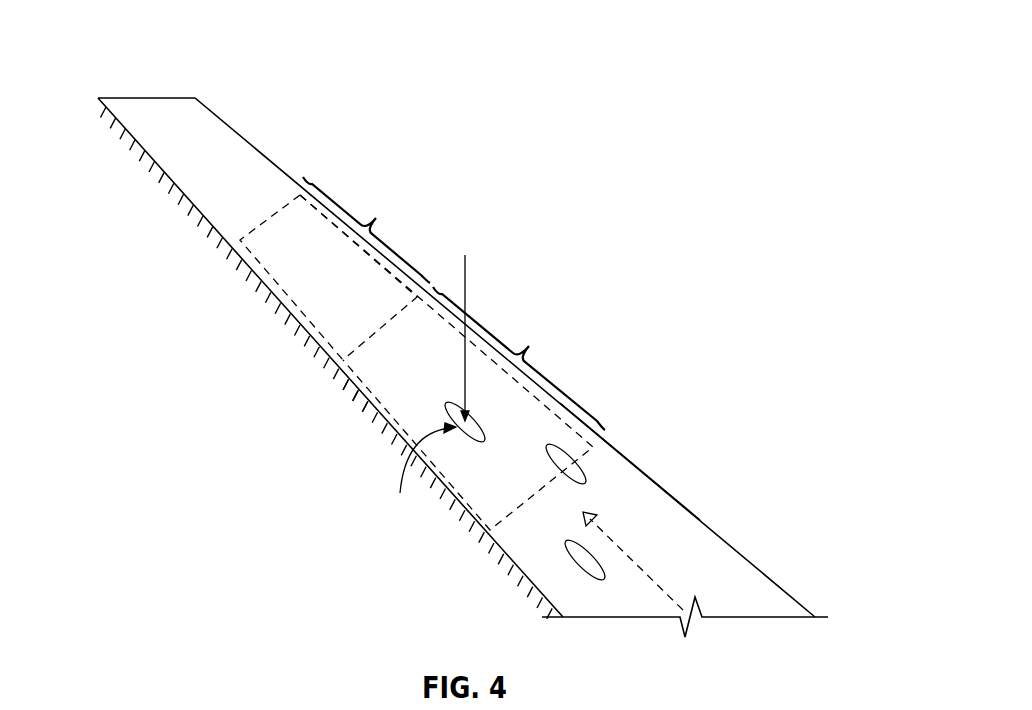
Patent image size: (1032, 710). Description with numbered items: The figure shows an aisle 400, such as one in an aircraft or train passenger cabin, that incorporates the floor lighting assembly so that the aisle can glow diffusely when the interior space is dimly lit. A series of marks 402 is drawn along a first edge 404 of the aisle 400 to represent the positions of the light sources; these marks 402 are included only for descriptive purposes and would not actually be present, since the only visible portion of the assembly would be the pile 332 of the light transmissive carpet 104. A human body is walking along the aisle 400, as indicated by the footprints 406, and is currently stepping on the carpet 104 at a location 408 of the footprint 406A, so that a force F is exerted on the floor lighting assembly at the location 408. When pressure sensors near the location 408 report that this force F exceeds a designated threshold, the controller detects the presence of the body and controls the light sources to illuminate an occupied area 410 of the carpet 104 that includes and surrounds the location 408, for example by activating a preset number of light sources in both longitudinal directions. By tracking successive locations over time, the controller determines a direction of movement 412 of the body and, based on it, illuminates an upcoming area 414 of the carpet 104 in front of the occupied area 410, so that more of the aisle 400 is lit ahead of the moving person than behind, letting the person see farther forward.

The aisle 400 is at (235, 137).
The marks 402 is at (343, 375).
The first edge 404 is at (220, 233).
The footprints 406 is at (563, 447).
The footprint 406A is at (473, 440).
The location 408 is at (417, 474).
The occupied area 410 is at (452, 362).
The direction of movement 412 is at (635, 563).
The upcoming area 414 is at (335, 268).
The pile 332 is at (630, 478).
The light transmissive carpet 104 is at (658, 523).
The force F is at (467, 274).